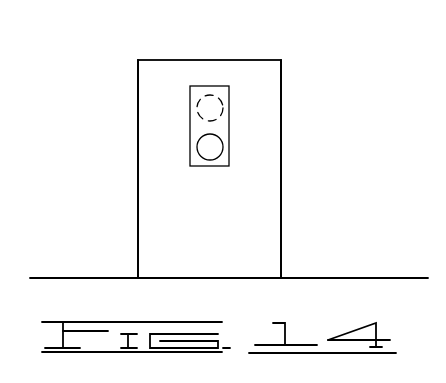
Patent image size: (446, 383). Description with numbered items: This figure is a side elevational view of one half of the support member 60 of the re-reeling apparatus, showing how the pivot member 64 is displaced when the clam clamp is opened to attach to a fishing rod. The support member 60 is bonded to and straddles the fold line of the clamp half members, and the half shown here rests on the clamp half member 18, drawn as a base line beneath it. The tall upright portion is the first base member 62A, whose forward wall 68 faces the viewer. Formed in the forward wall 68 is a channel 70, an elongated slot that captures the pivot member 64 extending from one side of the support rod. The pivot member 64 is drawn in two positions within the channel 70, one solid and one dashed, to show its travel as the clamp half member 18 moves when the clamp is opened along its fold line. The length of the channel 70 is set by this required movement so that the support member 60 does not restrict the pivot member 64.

The clamp half member 18 is at (330, 278).
The support member 60 is at (138, 100).
The first base member 62A is at (137, 224).
The pivot member 64 is at (224, 103).
The forward wall 68 is at (265, 206).
The channel 70 is at (208, 87).